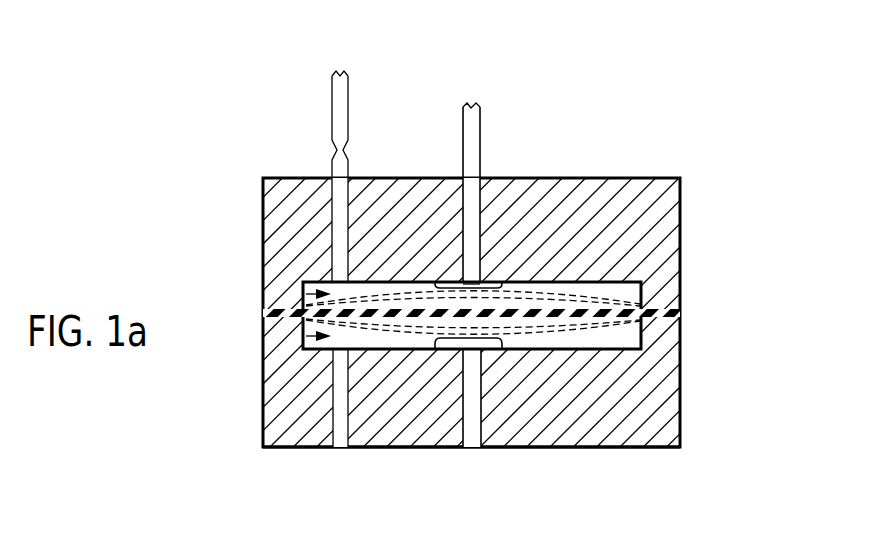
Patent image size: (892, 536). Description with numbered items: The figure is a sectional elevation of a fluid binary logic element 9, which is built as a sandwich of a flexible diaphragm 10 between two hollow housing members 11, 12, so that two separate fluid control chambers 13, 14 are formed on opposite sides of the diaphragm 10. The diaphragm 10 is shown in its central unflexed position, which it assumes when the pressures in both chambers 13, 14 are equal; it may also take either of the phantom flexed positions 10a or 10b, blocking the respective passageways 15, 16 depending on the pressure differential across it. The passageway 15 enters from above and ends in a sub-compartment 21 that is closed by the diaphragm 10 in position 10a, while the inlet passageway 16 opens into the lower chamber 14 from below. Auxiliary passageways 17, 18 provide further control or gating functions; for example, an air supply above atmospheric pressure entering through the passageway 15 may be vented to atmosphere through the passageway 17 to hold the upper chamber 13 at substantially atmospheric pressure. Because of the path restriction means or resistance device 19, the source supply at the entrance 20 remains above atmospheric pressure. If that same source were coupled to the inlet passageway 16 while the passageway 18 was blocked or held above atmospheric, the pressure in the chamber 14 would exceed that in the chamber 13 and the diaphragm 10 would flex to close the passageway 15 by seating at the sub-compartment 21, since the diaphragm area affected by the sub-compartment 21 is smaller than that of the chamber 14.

The fluid binary logic element 9 is at (621, 174).
The flexible diaphragm 10 is at (681, 311).
The phantom flexed position of diaphragm 10a is at (628, 297).
The phantom flexed position of diaphragm 10b is at (600, 328).
The hollow housing member 11 is at (586, 195).
The hollow housing member 12 is at (665, 423).
The fluid control chamber 13 is at (303, 294).
The fluid control chamber 14 is at (303, 335).
The passageway 15 is at (500, 166).
The inlet passageway 16 is at (470, 433).
The auxiliary passageway 17 is at (302, 177).
The auxiliary passageway 18 is at (340, 432).
The path restriction means 19 is at (336, 151).
The entrance 20 is at (475, 103).
The sub-compartment 21 is at (447, 282).